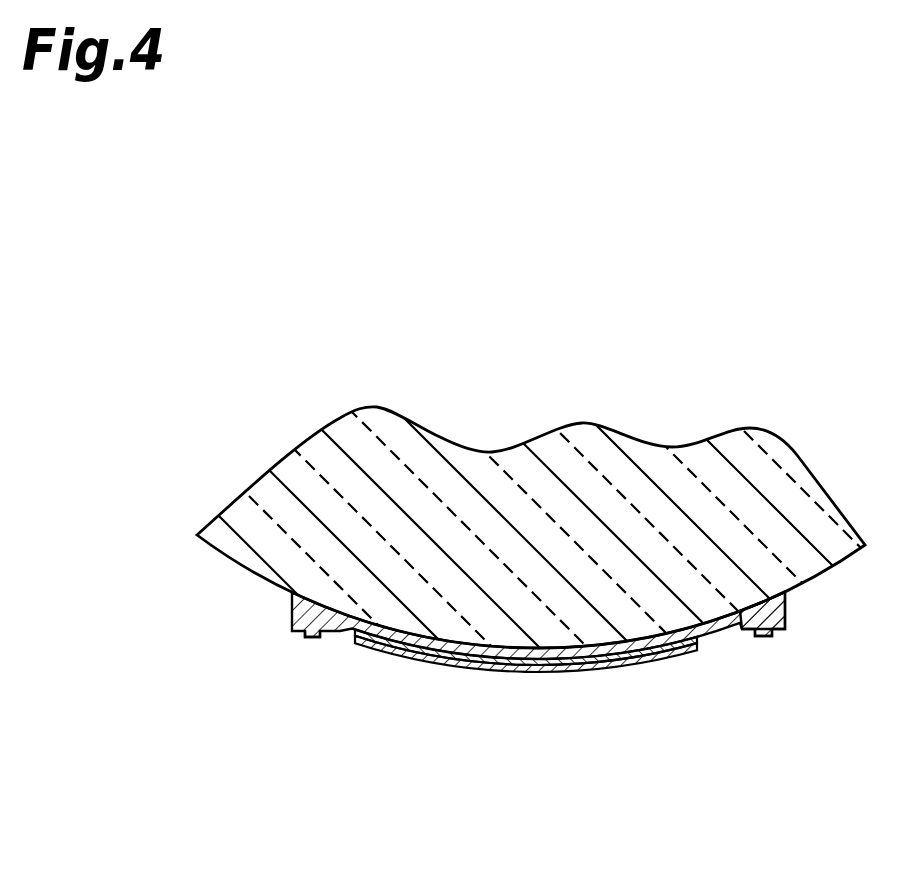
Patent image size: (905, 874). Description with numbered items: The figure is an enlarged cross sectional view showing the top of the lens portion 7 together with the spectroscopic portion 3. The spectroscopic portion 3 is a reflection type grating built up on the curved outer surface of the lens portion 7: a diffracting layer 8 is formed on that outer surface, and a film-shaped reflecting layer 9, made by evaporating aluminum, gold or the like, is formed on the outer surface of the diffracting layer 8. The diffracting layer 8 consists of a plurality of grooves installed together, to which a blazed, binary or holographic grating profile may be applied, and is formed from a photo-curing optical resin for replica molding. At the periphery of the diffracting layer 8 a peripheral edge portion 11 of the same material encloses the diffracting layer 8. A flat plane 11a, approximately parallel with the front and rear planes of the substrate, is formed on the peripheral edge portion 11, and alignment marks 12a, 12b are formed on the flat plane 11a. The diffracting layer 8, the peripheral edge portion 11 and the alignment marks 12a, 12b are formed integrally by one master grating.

The lens portion 7 is at (257, 560).
The peripheral edge portion 11 is at (283, 622).
The flat plane 11a is at (778, 633).
The alignment mark 12a is at (762, 636).
The alignment mark 12b is at (313, 638).
The diffracting layer 8 is at (363, 632).
The reflecting layer 9 is at (517, 672).
The spectroscopic portion 3 is at (413, 807).